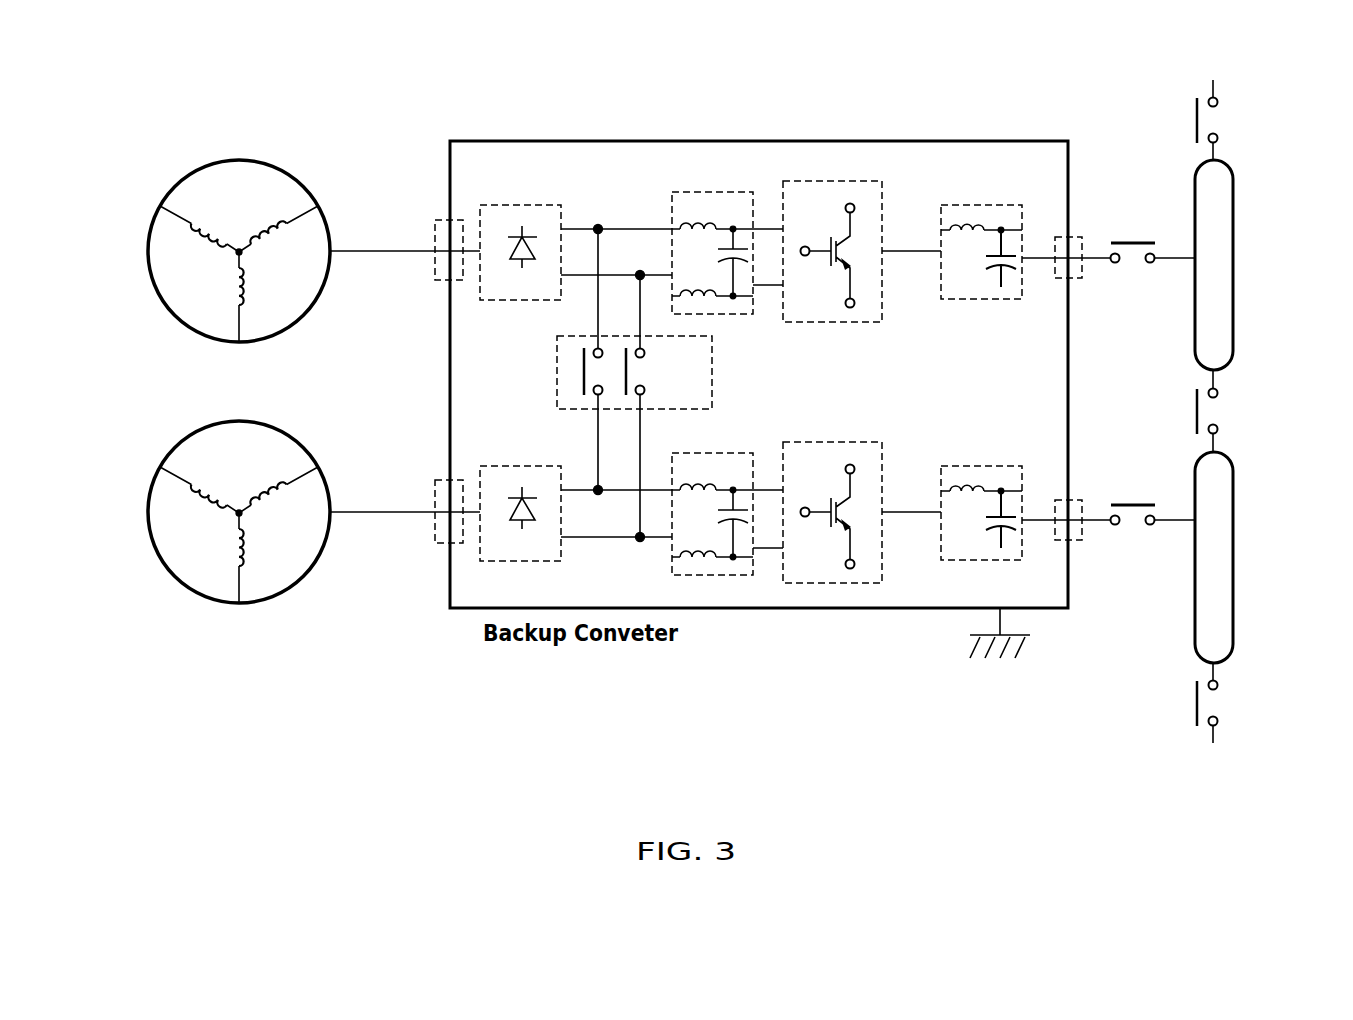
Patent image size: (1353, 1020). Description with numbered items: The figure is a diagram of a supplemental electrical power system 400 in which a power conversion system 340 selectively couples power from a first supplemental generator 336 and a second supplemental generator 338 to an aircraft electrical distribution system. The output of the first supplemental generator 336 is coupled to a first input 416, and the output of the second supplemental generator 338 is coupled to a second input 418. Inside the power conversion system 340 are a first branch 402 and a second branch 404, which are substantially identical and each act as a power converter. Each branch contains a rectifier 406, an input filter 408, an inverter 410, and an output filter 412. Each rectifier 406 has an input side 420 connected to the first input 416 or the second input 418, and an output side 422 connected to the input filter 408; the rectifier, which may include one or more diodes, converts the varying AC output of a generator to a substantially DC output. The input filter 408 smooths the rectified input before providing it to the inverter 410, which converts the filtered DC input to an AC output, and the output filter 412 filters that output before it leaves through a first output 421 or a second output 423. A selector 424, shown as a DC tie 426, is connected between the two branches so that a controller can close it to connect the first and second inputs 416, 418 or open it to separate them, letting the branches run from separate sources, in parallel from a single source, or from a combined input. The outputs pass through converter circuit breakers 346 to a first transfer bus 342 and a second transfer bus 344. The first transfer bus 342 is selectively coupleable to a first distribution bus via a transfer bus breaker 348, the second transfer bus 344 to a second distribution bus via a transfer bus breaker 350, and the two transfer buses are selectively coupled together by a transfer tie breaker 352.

The supplemental electrical power system 400 is at (472, 62).
The power conversion system 340 is at (620, 141).
The second supplemental generator 338 is at (165, 201).
The first supplemental generator 336 is at (165, 461).
The second branch 404 is at (386, 200).
The first branch 402 is at (373, 607).
The input side 420 is at (477, 208).
The second input 418 is at (437, 280).
The first input 416 is at (437, 480).
The rectifier 406 is at (516, 205).
The output side 422 is at (565, 222).
The input filter 408 is at (697, 192).
The inverter 410 is at (810, 181).
The output filter 412 is at (955, 205).
The selector 424 is at (645, 372).
The DC tie 426 is at (577, 373).
The second output 423 is at (1078, 237).
The first output 421 is at (1078, 540).
The converter circuit breaker 346 is at (1132, 243).
The second transfer bus 344 is at (1233, 263).
The first transfer bus 342 is at (1233, 545).
The transfer bus breaker 350 is at (1197, 116).
The transfer tie breaker 352 is at (1197, 410).
The transfer bus breaker 348 is at (1190, 713).